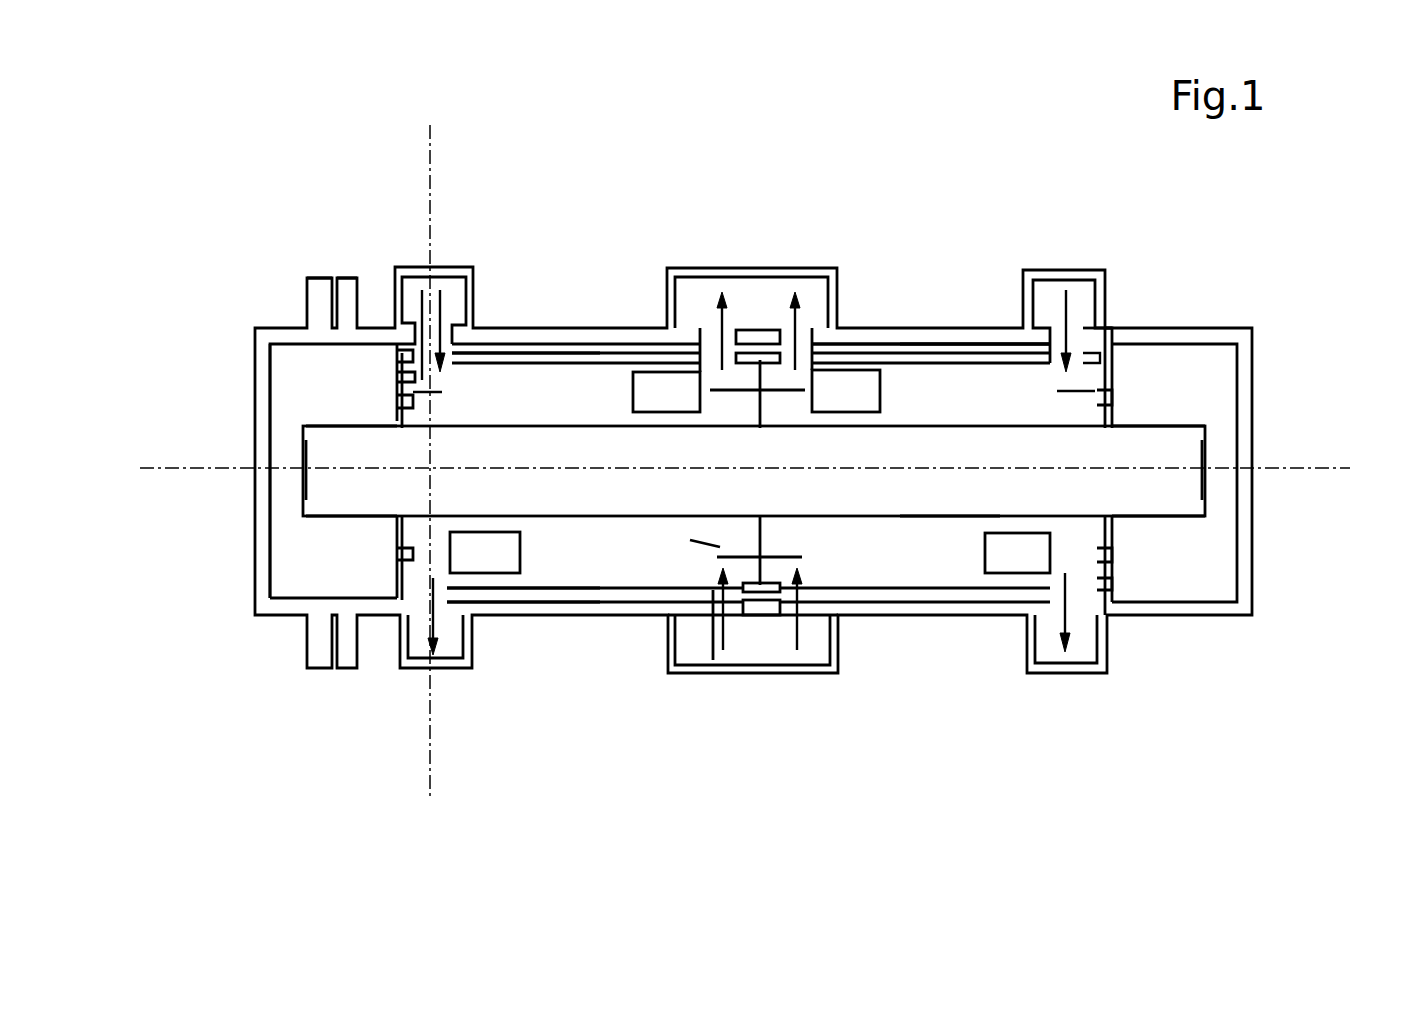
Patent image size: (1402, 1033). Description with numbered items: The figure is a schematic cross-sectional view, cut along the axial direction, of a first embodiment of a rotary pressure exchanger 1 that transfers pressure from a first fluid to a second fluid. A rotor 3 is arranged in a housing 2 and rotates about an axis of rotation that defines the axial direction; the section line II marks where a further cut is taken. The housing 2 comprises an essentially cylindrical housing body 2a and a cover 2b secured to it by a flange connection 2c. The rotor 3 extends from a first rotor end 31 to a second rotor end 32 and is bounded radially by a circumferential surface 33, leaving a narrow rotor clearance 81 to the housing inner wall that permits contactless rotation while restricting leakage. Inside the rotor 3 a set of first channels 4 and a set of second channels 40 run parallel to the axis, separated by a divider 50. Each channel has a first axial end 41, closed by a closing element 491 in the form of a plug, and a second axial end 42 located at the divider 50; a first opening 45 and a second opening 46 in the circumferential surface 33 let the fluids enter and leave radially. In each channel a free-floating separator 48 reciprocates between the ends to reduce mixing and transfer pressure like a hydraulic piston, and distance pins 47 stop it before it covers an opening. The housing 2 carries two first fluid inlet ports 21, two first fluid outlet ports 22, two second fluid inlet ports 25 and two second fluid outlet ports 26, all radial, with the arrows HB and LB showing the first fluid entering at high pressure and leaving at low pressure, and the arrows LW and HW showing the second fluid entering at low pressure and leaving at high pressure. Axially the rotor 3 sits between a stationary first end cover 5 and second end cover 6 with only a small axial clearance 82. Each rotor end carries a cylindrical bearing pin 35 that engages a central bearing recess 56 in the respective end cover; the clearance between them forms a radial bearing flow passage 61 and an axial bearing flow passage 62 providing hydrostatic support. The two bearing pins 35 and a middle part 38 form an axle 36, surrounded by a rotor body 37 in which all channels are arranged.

The rotary pressure exchanger 1 is at (1278, 250).
The housing 2 is at (1187, 327).
The housing body 2a is at (1240, 347).
The cover 2b is at (255, 535).
The flange connection 2c is at (326, 277).
The rotor 3 is at (937, 347).
The first channels 4 is at (562, 377).
The first end cover 5 is at (285, 363).
The second end cover 6 is at (1223, 585).
The first fluid inlet ports 21 is at (1105, 272).
The first fluid outlet ports 22 is at (1090, 673).
The second fluid inlet ports 25 is at (832, 673).
The second fluid outlet ports 26 is at (812, 268).
The first rotor end 31 is at (393, 377).
The second rotor end 32 is at (1115, 327).
The circumferential surface 33 is at (593, 607).
The bearing pin 35 is at (1172, 498).
The axle 36 is at (518, 405).
The rotor body 37 is at (552, 587).
The middle part 38 is at (953, 528).
The second channels 40 is at (935, 630).
The first axial end 41 is at (1073, 620).
The second axial end 42 is at (783, 577).
The first opening 45 is at (1065, 597).
The second opening 46 is at (715, 590).
The distance pin 47 is at (690, 540).
The separator 48 is at (525, 673).
The divider 50 is at (772, 378).
The bearing recess 56 is at (1210, 452).
The radial bearing flow passage 61 is at (1183, 428).
The axial bearing flow passage 62 is at (1208, 480).
The rotor clearance 81 is at (998, 347).
The axial clearance 82 is at (1112, 583).
The closing element 491 is at (400, 570).
The high-pressure first fluid arrows HB is at (1063, 313).
The high-pressure second fluid arrows HW is at (797, 318).
The low-pressure first fluid arrows LB is at (1063, 575).
The low-pressure second fluid arrows LW is at (797, 590).
The section line II is at (443, 800).